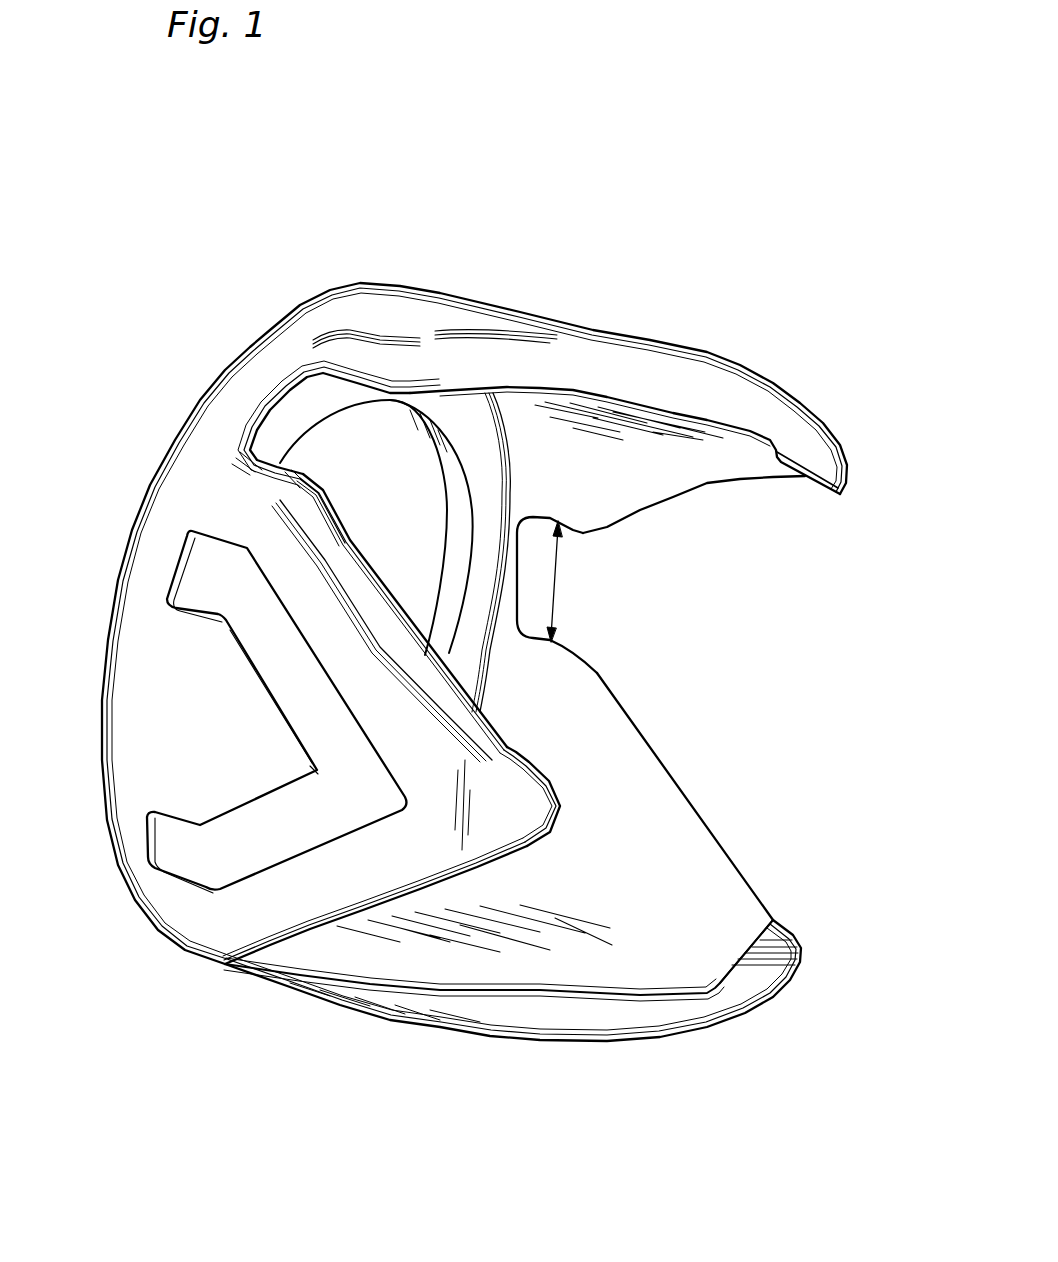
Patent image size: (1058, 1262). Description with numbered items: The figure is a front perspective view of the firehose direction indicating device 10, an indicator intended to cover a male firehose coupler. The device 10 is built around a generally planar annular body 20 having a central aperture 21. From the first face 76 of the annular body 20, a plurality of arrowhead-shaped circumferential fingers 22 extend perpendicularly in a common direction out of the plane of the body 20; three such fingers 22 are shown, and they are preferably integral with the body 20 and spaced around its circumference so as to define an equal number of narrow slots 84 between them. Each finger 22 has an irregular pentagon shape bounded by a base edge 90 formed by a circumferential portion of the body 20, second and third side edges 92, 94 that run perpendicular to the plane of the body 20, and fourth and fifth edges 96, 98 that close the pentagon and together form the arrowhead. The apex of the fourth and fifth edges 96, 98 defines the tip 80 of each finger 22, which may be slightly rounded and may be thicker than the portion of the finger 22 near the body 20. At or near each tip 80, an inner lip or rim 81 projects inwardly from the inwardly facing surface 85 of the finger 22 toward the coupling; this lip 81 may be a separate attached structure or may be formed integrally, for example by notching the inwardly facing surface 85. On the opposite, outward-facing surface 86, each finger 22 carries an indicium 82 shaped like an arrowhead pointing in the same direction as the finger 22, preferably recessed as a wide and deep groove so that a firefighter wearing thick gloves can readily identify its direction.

The firehose direction indicating device 10 is at (757, 203).
The annular body 20 is at (333, 312).
The aperture 21 is at (313, 450).
The arrowhead-shaped circumferential fingers 22 is at (700, 352).
The first face 76 is at (495, 548).
The tip 80 is at (855, 472).
The inner lip or rim 81 is at (820, 493).
The indicium 82 is at (180, 853).
The narrow slots 84 is at (560, 583).
The inwardly facing surface 85 is at (637, 483).
The outward-facing surface 86 is at (150, 775).
The base edge 90 is at (270, 385).
The second side edge 92 is at (363, 362).
The third side edge 94 is at (225, 462).
The fourth edge 96 is at (703, 497).
The fifth edge 98 is at (590, 367).